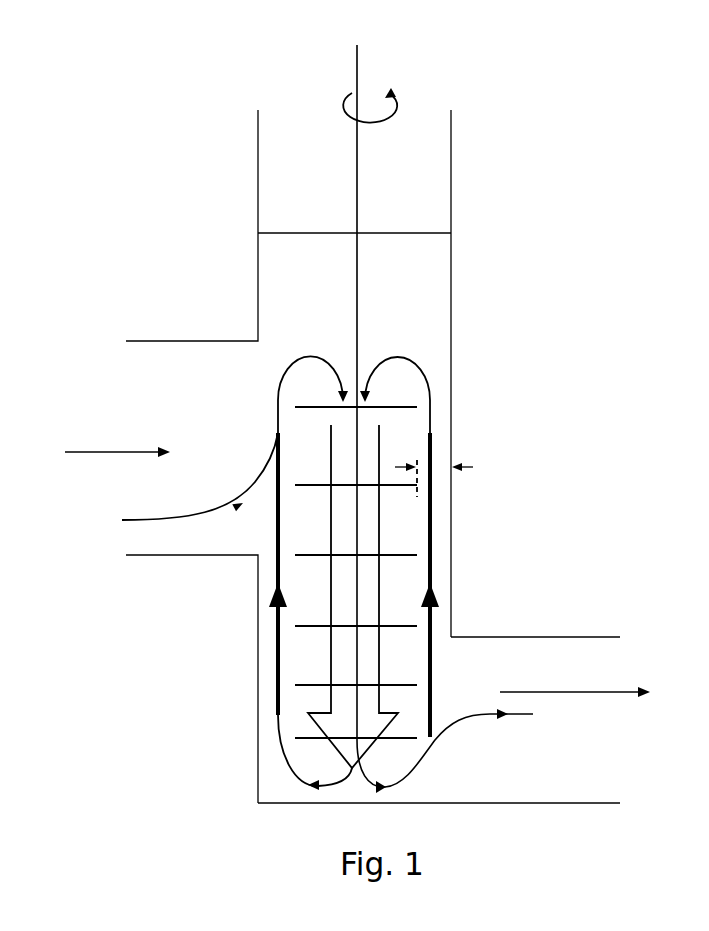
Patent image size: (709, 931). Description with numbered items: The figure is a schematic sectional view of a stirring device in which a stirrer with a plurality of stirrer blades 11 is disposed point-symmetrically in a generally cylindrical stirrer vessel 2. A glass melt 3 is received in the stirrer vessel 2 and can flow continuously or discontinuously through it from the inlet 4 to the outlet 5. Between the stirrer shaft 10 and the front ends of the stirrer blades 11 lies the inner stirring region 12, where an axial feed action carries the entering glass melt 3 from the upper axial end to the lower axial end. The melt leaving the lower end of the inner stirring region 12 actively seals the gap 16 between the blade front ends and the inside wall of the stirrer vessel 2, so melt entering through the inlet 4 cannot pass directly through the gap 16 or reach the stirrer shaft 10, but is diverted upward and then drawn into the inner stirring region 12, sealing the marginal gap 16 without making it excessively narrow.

The stirrer vessel 2 is at (443, 163).
The glass melt 3 is at (433, 260).
The inlet 4 is at (158, 367).
The outlet 5 is at (600, 647).
The stirrer shaft 10 is at (357, 68).
The stirrer blades 11 is at (395, 404).
The inner stirring region 12 is at (368, 506).
The gap 16 is at (292, 572).